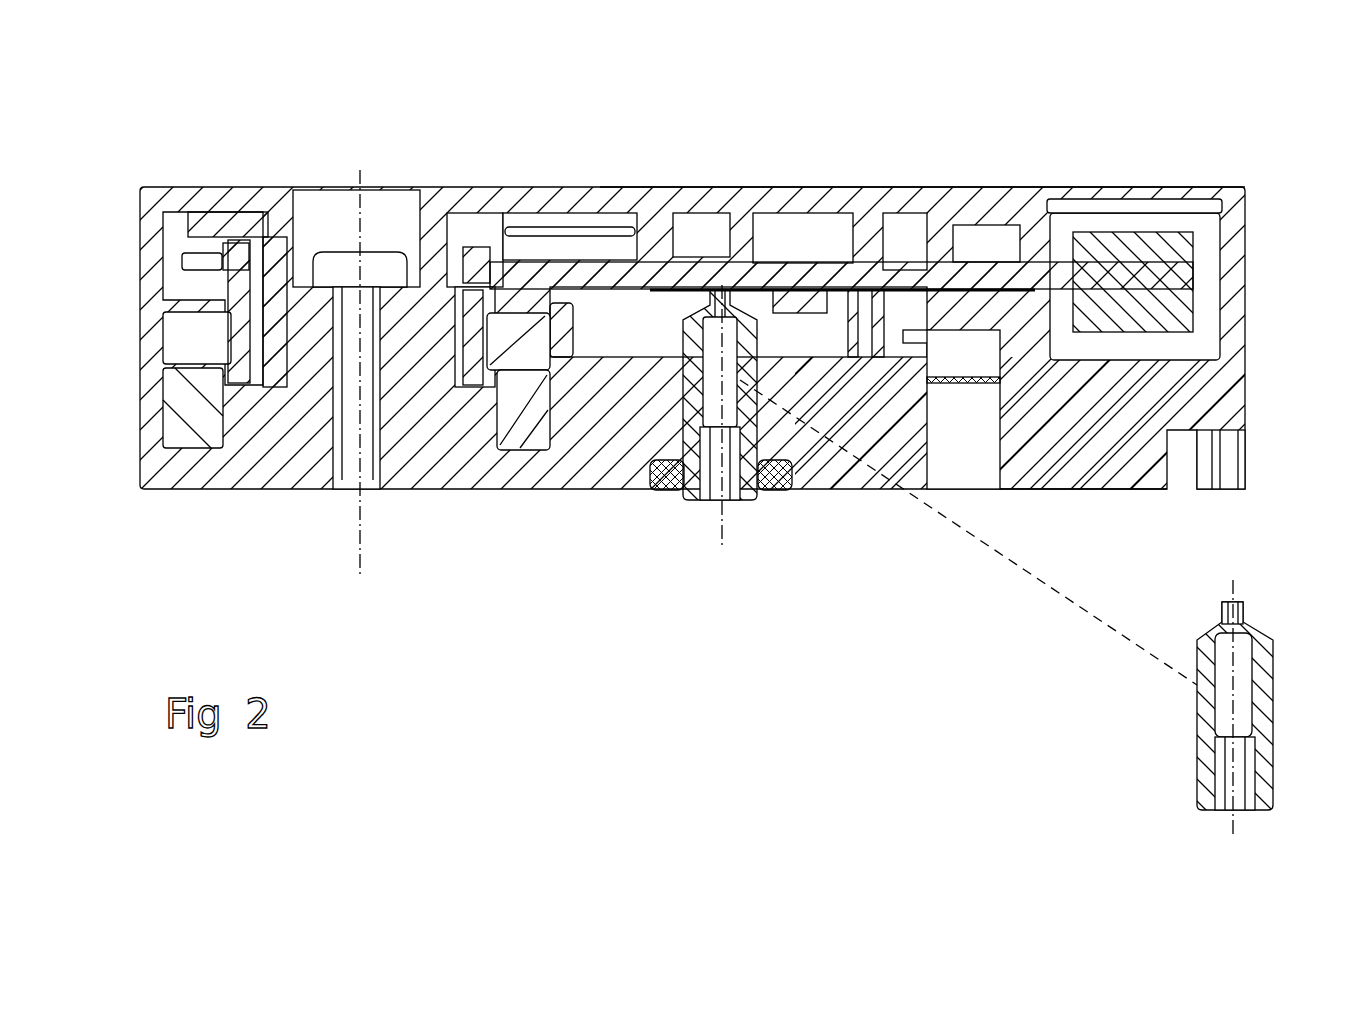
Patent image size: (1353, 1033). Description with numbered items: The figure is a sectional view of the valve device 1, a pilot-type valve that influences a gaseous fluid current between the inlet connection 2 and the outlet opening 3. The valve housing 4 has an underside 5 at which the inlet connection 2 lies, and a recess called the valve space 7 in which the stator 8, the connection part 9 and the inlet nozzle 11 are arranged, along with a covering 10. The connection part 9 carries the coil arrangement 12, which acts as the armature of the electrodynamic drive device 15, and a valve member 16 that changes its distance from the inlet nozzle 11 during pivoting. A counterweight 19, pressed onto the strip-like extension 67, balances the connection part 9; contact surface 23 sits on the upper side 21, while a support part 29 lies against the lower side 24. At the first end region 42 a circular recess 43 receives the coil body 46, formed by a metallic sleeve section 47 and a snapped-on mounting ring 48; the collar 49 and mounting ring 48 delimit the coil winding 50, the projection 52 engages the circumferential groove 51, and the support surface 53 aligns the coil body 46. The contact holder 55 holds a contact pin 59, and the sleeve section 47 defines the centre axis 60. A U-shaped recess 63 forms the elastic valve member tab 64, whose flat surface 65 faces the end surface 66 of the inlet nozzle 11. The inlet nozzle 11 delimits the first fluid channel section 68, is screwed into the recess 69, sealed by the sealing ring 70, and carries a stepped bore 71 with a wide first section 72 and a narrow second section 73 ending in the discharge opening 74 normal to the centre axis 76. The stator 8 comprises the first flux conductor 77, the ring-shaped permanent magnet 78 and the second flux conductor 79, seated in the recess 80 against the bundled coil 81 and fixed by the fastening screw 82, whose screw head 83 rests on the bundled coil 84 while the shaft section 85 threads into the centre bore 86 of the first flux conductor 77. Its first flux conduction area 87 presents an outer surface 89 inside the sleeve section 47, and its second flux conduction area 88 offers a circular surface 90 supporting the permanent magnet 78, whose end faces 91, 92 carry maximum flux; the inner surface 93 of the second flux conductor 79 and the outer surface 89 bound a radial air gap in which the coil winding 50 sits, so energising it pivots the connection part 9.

The valve device 1 is at (1163, 72).
The inlet connection 2 is at (737, 530).
The outlet opening 3 is at (716, 170).
The valve housing 4 is at (1220, 378).
The underside 5 is at (1118, 492).
The valve space 7 is at (912, 222).
The stator 8 is at (275, 492).
The connection part 9 is at (828, 335).
The covering 10 is at (500, 258).
The inlet nozzle 11 is at (668, 420).
The coil arrangement 12 is at (222, 225).
The drive device 15 is at (192, 331).
The valve member 16 is at (724, 250).
The counterweight 19 is at (1113, 243).
The upper side 21 is at (990, 268).
The contact surface 23 is at (566, 387).
The lower side 24 is at (1025, 300).
The support part 29 is at (815, 318).
The first end region 42 is at (168, 262).
The circular recess 43 is at (210, 277).
The coil body 46 is at (290, 345).
The sleeve section 47 is at (455, 360).
The mounting ring 48 is at (562, 250).
The collar 49 is at (500, 420).
The coil winding 50 is at (236, 376).
The circumferential groove 51 is at (266, 274).
The circumferential projection 52 is at (472, 247).
The support surface 53 is at (185, 262).
The contact holder 55 is at (465, 285).
The contact pin 59 is at (598, 232).
The centre axis 60 is at (358, 580).
The U-shaped recess 63 is at (795, 325).
The valve member tab 64 is at (682, 268).
The flat surface 65 is at (655, 478).
The end surface 66 is at (762, 290).
The extension 67 is at (1062, 277).
The first section of the fluid channel 68 is at (720, 520).
The recess 69 is at (745, 420).
The sealing ring 70 is at (700, 405).
The stepped bore 71 is at (730, 405).
The first section of the stepped bore 72 is at (728, 362).
The second section of the stepped bore 73 is at (727, 292).
The discharge opening 74 is at (1220, 590).
The centre axis 76 is at (778, 470).
The first flux conductor 77 is at (207, 484).
The permanent magnet 78 is at (178, 430).
The second flux conductor 79 is at (232, 358).
The recess 80 is at (560, 405).
The bundled coil 81 is at (570, 232).
The fastening screw 82 is at (366, 235).
The screw head 83 is at (390, 268).
The bundled coil 84 is at (302, 452).
The shaft section 85 is at (378, 405).
The shank 86 is at (340, 445).
The first flux conduction area 87 is at (285, 380).
The second flux conduction area 88 is at (168, 484).
The outer surface 89 is at (250, 470).
The circular surface 90 is at (175, 465).
The end face 91 is at (503, 452).
The end face 92 is at (530, 340).
The inner surface 93 is at (232, 282).